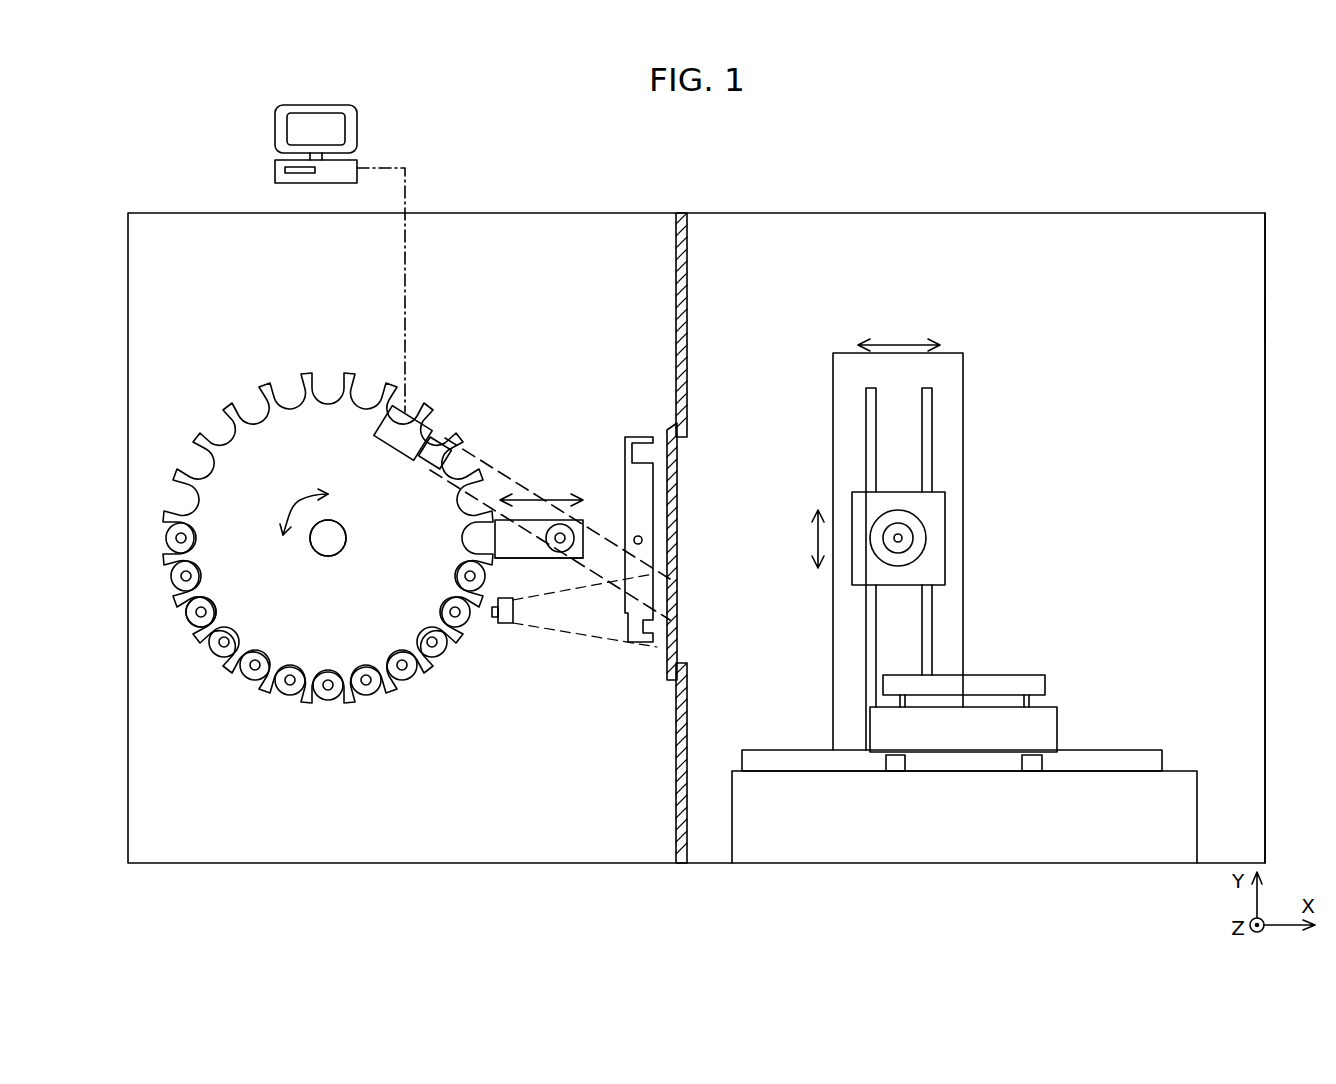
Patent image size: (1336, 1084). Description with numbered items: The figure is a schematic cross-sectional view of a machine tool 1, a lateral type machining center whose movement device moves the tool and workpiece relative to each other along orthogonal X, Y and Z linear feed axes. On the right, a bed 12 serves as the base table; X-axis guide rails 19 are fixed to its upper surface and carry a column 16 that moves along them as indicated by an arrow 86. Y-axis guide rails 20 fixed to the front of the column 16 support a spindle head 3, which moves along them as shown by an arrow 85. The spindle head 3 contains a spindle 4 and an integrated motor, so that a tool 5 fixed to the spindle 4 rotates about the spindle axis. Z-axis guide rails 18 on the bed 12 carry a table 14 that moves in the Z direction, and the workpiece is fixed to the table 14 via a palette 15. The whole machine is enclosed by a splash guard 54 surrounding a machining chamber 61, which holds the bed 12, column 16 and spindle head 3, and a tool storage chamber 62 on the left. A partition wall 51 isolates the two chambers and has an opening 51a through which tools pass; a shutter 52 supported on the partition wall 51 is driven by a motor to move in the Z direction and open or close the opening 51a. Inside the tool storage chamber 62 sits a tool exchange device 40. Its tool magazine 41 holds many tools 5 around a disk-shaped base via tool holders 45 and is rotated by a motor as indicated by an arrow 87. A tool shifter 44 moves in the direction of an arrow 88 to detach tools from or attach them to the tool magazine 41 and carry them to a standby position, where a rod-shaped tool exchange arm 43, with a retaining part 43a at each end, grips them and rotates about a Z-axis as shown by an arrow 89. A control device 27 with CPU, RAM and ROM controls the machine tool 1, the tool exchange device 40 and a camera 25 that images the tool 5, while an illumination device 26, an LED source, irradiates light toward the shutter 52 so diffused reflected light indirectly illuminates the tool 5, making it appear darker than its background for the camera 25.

The machine tool 1 is at (1083, 190).
The spindle head 3 is at (945, 508).
The spindle 4 is at (918, 538).
The tool 5 is at (186, 576).
The bed 12 is at (1157, 847).
The table 14 is at (1045, 728).
The palette 15 is at (1032, 687).
The column 16 is at (950, 445).
The Z-axis guide rails 18 is at (895, 763).
The X-axis guide rails 19 is at (765, 763).
The Y-axis guide rails 20 is at (866, 413).
The camera 25 is at (398, 432).
The illumination device 26 is at (505, 623).
The control device 27 is at (360, 128).
The tool exchange device 40 is at (173, 432).
The tool magazine 41 is at (218, 503).
The tool exchange arm 43 is at (628, 437).
The retaining part 43a is at (652, 455).
The tool shifter 44 is at (533, 520).
The tool holder 45 is at (200, 612).
The partition wall 51 is at (688, 232).
The opening 51a is at (677, 662).
The shutter 52 is at (677, 472).
The splash guard 54 is at (1268, 318).
The machining chamber 61 is at (1235, 237).
The tool storage chamber 62 is at (170, 232).
The arrow 85 is at (812, 528).
The arrow 86 is at (892, 345).
The arrow 87 is at (288, 508).
The arrow 88 is at (558, 493).
The arrow 89 is at (603, 565).